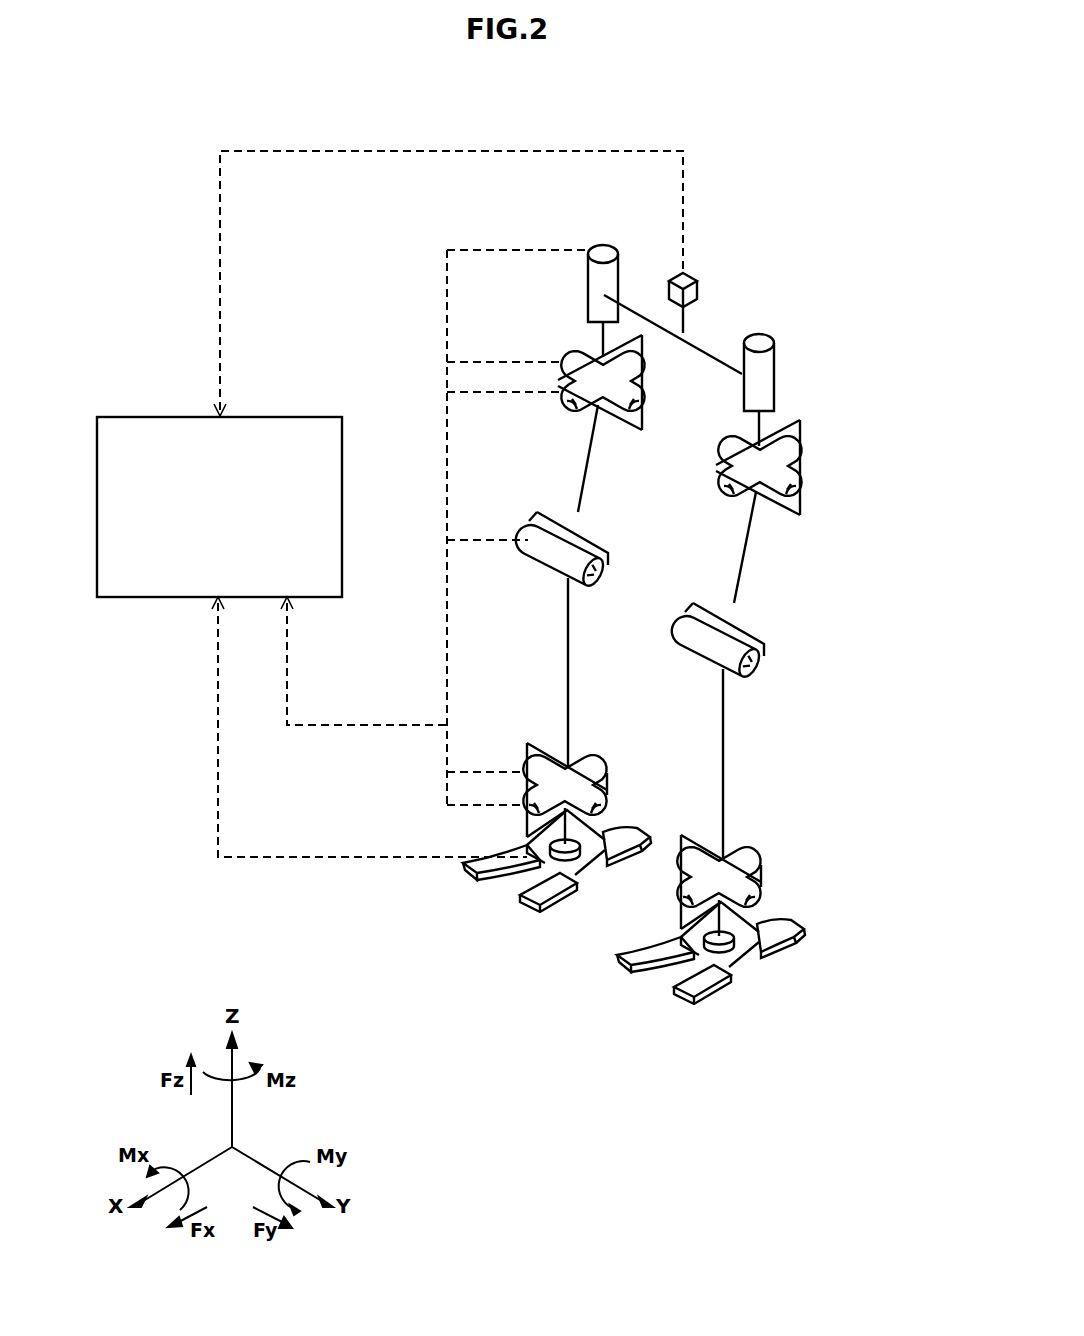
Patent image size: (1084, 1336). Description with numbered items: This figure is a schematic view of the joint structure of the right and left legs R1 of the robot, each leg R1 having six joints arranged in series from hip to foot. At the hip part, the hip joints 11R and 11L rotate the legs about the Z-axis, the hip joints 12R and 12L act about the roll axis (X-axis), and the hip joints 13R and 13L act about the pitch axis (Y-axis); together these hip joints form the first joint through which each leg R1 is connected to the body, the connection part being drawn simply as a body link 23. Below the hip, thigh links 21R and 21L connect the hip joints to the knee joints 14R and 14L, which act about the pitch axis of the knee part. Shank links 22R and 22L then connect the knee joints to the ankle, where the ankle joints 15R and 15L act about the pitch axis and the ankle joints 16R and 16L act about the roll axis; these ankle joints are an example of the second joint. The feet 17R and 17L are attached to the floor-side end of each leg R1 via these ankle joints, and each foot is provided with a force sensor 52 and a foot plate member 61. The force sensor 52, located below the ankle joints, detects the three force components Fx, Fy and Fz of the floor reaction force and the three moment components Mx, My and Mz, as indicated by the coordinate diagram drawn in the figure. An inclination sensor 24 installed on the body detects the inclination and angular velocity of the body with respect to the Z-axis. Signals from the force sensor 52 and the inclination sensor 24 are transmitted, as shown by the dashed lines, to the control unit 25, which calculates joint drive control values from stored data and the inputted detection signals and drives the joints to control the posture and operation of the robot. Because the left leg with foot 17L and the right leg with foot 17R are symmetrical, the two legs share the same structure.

The hip joint 11R is at (613, 282).
The hip joint 11L is at (770, 370).
The hip joint 12R is at (572, 403).
The hip joint 12L is at (732, 487).
The hip joint 13R is at (568, 357).
The hip joint 13L is at (735, 443).
The knee joint 14R is at (592, 588).
The knee joint 14L is at (760, 673).
The ankle joint 15R is at (573, 826).
The ankle joint 15L is at (745, 916).
The ankle joint 16R is at (593, 762).
The ankle joint 16L is at (748, 853).
The foot 17R is at (412, 870).
The foot 17L is at (826, 975).
The thigh link 21R is at (583, 477).
The thigh link 21L is at (750, 558).
The shank link 22R is at (567, 700).
The shank link 22L is at (724, 760).
The body link 23 is at (683, 333).
The inclination sensor 24 is at (697, 292).
The control unit 25 is at (158, 415).
The force sensor 52 is at (533, 853).
The foot plate member 61 is at (528, 895).
The leg R1 is at (623, 566).